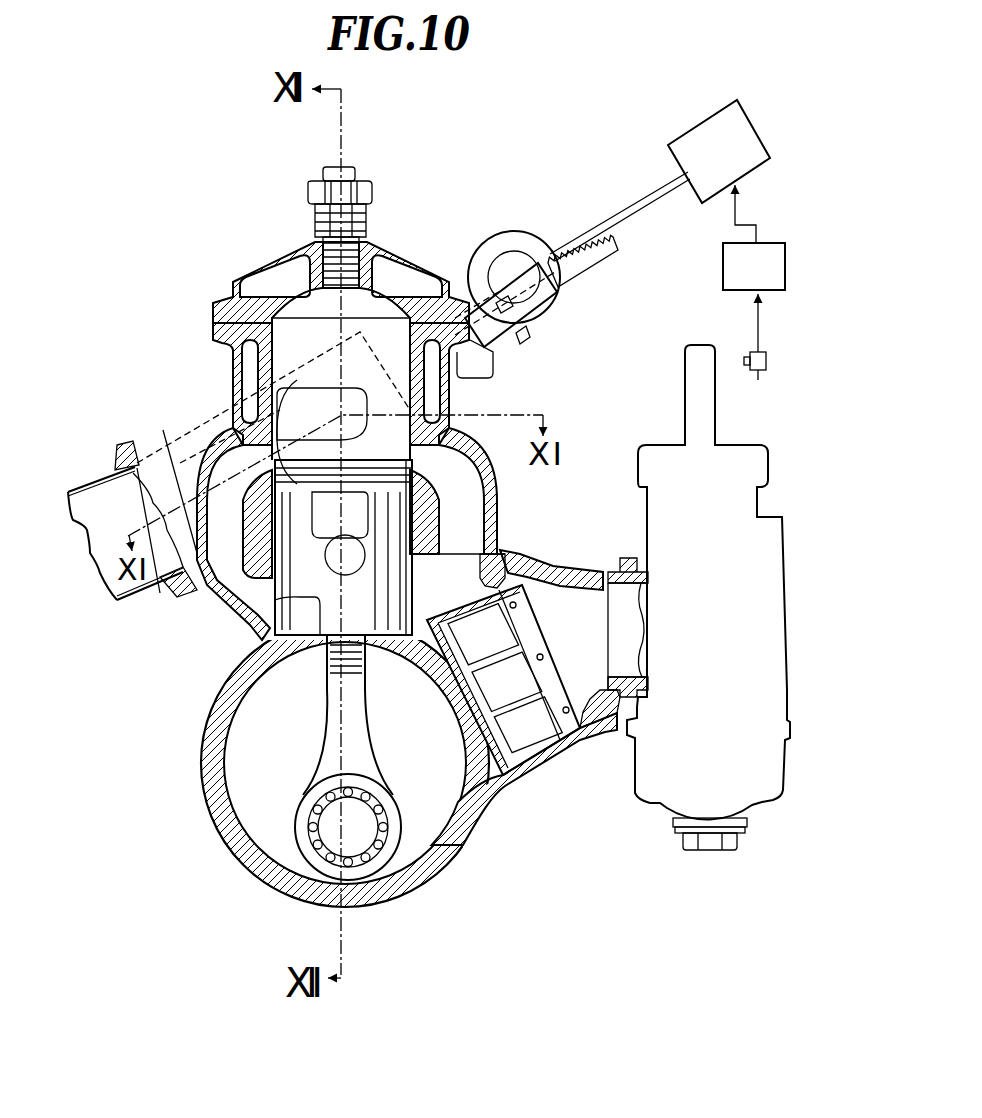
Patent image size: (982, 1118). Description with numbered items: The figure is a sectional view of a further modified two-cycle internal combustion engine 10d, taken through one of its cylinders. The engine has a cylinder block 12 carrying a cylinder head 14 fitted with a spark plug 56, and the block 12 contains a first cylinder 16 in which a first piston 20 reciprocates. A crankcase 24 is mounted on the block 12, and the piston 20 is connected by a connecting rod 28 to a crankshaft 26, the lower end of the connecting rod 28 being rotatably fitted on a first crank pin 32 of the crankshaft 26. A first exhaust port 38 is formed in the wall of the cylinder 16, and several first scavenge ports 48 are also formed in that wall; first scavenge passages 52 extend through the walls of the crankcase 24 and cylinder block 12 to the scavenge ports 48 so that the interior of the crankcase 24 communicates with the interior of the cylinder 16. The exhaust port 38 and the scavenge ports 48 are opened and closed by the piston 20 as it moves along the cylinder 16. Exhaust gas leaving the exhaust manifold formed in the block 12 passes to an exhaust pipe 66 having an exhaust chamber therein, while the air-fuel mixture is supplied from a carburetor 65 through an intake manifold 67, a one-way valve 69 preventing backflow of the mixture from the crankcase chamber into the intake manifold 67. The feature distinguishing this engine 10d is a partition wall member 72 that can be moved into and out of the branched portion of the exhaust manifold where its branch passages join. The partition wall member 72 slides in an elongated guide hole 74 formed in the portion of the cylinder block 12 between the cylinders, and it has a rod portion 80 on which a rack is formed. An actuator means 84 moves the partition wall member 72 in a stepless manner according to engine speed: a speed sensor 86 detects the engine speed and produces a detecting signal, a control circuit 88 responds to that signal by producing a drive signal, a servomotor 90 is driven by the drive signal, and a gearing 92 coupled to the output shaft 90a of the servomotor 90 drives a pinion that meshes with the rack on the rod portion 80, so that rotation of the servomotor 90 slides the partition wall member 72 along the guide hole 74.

The two-cycle engine 10d is at (240, 222).
The cylinder block 12 is at (453, 397).
The cylinder head 14 is at (268, 263).
The first cylinder 16 is at (228, 305).
The first piston 20 is at (335, 600).
The crankcase 24 is at (215, 808).
The crankshaft 26 is at (438, 826).
The connecting rod 28 is at (363, 734).
The first crank pin 32 is at (365, 846).
The first exhaust port 38 is at (282, 383).
The first scavenge ports 48 is at (412, 458).
The first scavenge passages 52 is at (492, 519).
The spark plug 56 is at (368, 196).
The carburetor 65 is at (748, 805).
The exhaust pipe 66 is at (83, 492).
The intake manifold 67 is at (560, 572).
The one-way valve 69 is at (546, 641).
The partition wall member 72 is at (341, 337).
The elongated guide hole 74 is at (190, 434).
The rod portion 80 is at (598, 254).
The actuator means 84 is at (580, 196).
The speed sensor 86 is at (759, 353).
The control circuit 88 is at (722, 264).
The servomotor 90 is at (705, 127).
The output shaft 90a is at (636, 196).
The gearing 92 is at (508, 230).